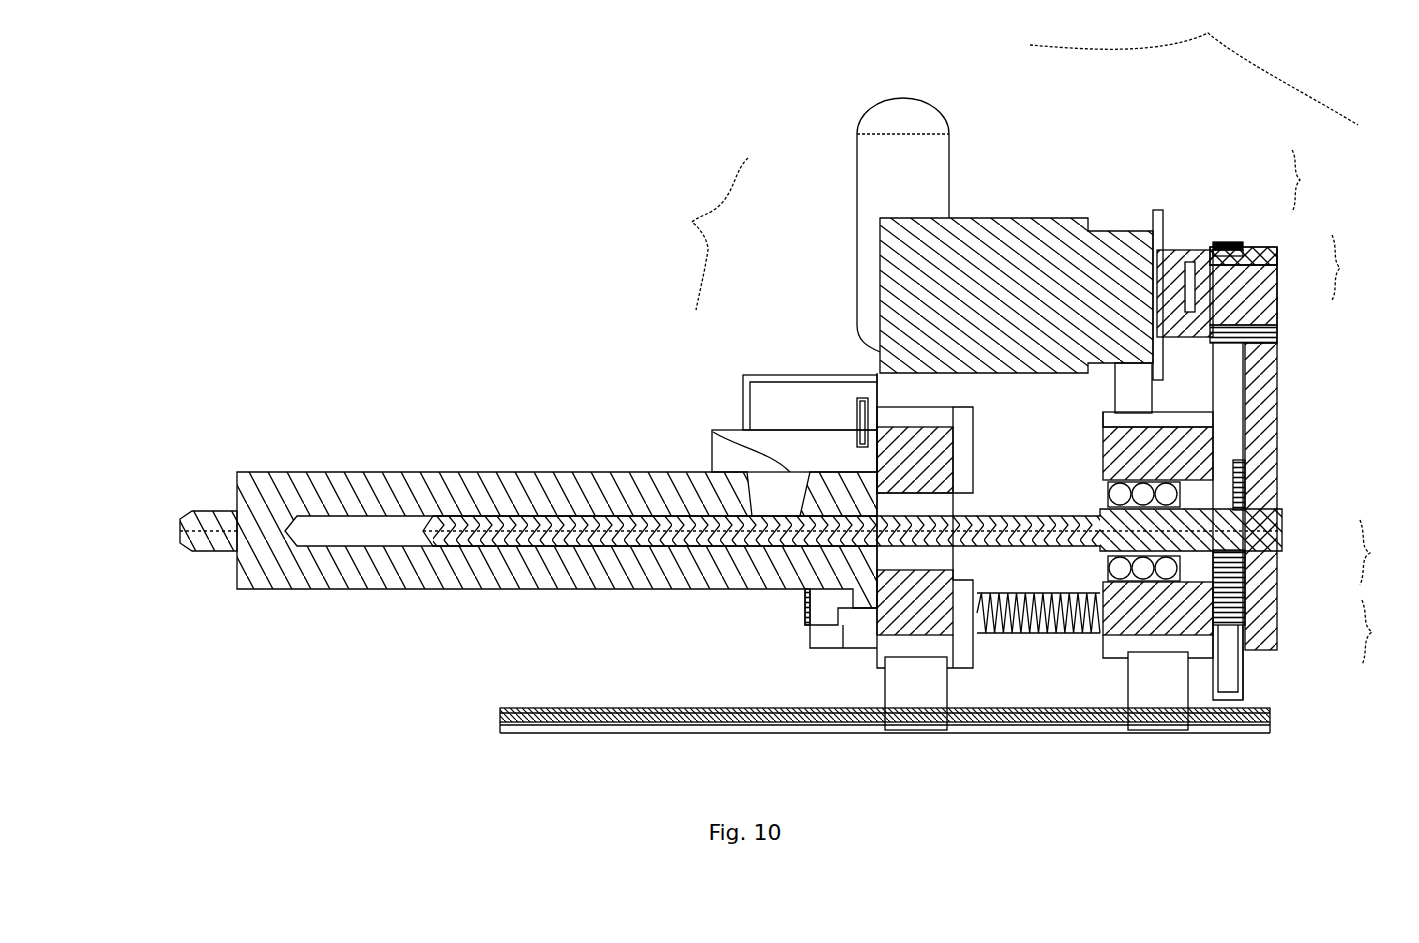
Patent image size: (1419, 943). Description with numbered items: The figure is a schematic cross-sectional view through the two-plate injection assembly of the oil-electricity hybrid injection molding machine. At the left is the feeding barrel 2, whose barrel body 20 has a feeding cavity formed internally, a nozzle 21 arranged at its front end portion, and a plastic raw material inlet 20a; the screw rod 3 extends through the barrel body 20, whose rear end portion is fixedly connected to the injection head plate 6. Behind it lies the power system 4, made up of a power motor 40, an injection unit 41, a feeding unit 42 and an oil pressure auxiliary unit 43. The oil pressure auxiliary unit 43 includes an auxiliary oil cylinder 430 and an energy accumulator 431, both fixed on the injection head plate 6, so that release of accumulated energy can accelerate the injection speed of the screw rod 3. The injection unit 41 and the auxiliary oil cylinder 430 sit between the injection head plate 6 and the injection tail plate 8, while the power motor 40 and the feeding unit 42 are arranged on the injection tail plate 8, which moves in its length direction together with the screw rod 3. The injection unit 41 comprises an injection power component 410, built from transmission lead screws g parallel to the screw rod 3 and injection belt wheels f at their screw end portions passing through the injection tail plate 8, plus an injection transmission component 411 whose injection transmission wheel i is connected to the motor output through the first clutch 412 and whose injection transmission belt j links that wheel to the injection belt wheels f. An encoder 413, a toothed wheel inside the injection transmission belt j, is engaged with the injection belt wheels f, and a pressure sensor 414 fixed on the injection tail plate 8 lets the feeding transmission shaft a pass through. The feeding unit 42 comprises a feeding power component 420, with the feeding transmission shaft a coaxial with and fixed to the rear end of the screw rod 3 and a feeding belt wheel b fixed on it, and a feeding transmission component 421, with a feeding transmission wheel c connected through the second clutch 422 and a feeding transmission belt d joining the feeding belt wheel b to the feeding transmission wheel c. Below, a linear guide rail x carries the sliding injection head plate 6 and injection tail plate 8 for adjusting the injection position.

The feeding barrel 2 is at (160, 508).
The nozzle 21 is at (203, 515).
The barrel body 20 is at (330, 490).
The plastic raw material inlet 20a is at (722, 442).
The screw rod 3 is at (543, 518).
The power system 4 is at (1194, 62).
The injection unit 41 is at (1168, 140).
The power motor 40 is at (1022, 245).
The oil pressure auxiliary unit 43 is at (698, 234).
The auxiliary oil cylinder 430 is at (812, 445).
The energy accumulator 431 is at (880, 183).
The injection transmission component 411 is at (1322, 181).
The first clutch 412 is at (1190, 250).
The encoder 413 is at (1270, 452).
The pressure sensor 414 is at (1265, 410).
The feeding power component 420 is at (1389, 552).
The feeding transmission component 421 is at (1364, 267).
The second clutch 422 is at (1280, 333).
The feeding unit 42 is at (1276, 664).
The injection power component 410 is at (1390, 632).
The feeding transmission shaft a is at (1275, 533).
The feeding belt wheel b is at (1262, 578).
The feeding transmission wheel c is at (1262, 297).
The feeding transmission belt d is at (1278, 250).
The injection belt wheel f is at (1245, 612).
The transmission lead screw g is at (1035, 637).
The injection transmission wheel i is at (1235, 256).
The injection transmission belt j is at (1225, 250).
The linear guide rail x is at (722, 735).
The injection head plate 6 is at (912, 690).
The injection tail plate 8 is at (1158, 682).